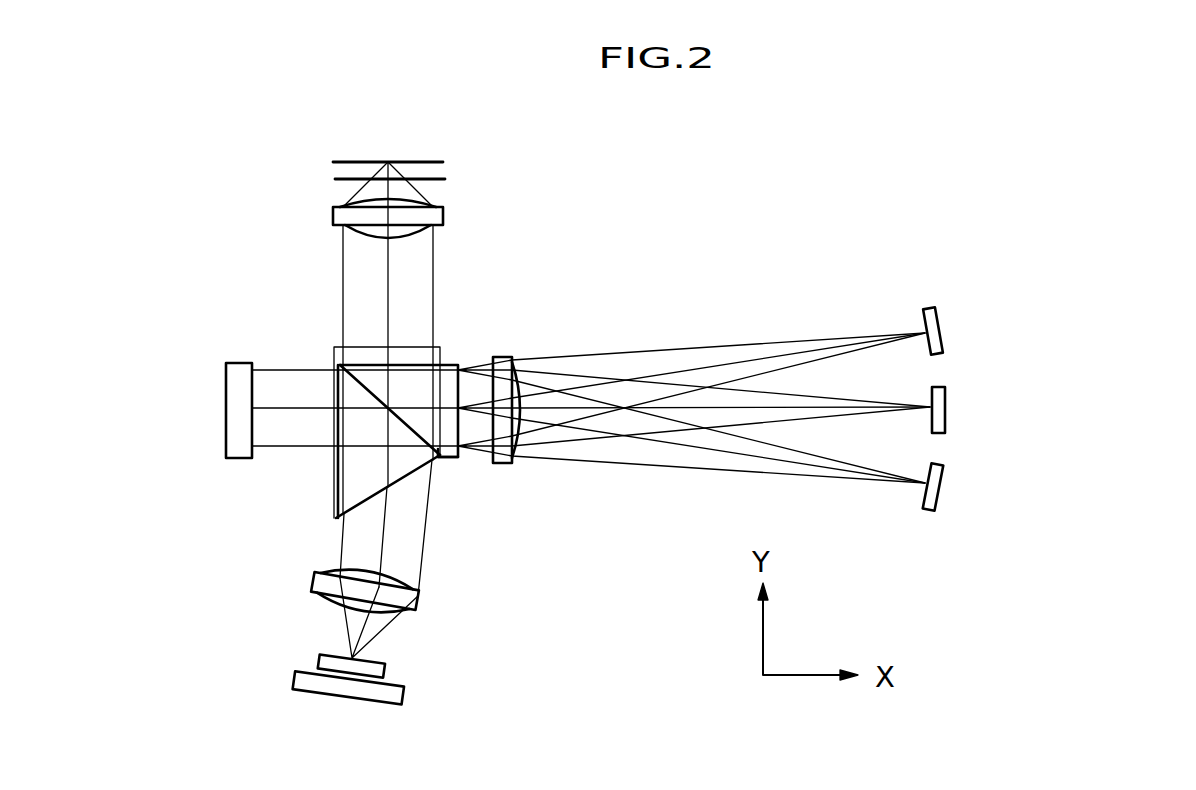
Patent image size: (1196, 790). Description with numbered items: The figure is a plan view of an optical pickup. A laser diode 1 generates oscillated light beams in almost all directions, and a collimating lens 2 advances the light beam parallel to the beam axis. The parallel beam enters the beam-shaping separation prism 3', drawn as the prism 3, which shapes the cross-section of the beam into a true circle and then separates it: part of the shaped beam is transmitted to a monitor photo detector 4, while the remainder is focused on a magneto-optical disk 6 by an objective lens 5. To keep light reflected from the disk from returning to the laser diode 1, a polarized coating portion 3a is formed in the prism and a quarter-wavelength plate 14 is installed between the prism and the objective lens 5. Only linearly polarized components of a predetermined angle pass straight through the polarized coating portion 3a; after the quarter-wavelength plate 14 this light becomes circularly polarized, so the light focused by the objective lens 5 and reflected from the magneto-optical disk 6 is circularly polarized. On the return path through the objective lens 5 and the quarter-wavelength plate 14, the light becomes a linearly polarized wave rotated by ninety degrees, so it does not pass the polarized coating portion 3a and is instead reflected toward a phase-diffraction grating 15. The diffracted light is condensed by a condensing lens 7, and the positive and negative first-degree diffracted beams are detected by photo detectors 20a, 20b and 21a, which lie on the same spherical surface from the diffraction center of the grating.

The laser diode 1 is at (390, 693).
The collimating lens 2 is at (412, 598).
The beam splitter prism 3 is at (357, 420).
The polarized coating portion 3a is at (338, 362).
The beam-shaping separation prism 3' is at (348, 497).
The monitor photo detector 4 is at (233, 395).
The objective lens 5 is at (416, 216).
The magneto-optical disk 6 is at (445, 177).
The condensing lens 7 is at (508, 465).
The quarter-wavelength plate 14 is at (437, 347).
The phase-diffraction grating 15 is at (445, 458).
The photo detector 20a is at (940, 316).
The photo detector 20b is at (938, 491).
The photo detector 21a is at (945, 401).